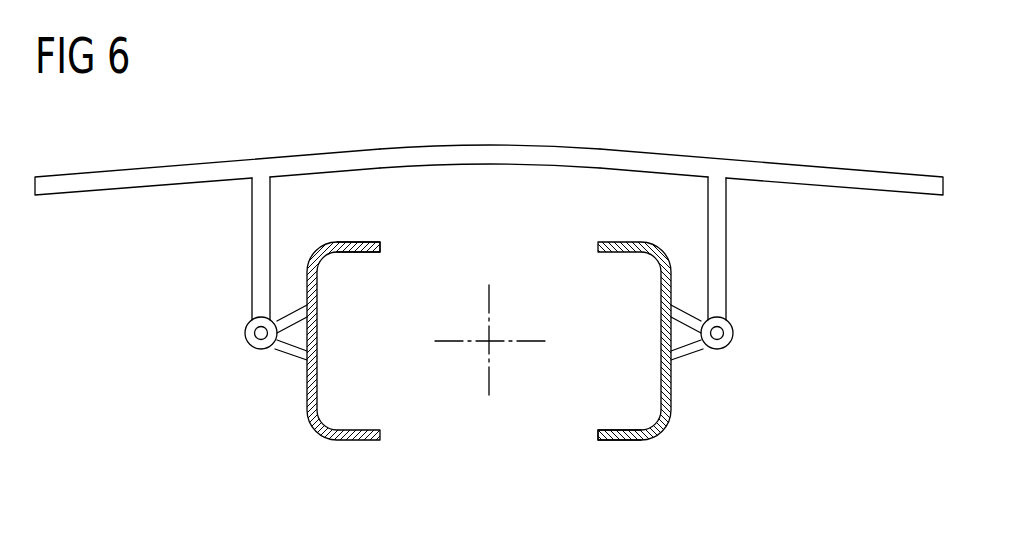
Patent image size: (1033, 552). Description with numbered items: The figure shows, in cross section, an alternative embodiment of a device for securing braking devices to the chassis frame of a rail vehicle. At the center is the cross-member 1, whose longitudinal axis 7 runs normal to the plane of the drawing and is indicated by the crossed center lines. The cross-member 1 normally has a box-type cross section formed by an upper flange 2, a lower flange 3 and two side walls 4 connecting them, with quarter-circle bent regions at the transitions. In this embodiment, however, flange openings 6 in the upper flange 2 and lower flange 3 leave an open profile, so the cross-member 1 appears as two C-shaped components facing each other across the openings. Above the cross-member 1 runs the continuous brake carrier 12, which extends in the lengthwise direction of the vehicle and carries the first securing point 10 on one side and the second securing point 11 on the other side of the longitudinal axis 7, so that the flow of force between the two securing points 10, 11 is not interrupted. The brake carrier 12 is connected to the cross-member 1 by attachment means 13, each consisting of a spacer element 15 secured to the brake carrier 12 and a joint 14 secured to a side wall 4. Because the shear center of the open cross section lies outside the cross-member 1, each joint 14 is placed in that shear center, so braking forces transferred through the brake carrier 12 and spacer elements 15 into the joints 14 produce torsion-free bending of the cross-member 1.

The cross-member 1 is at (454, 419).
The upper flange 2 is at (360, 243).
The lower flange 3 is at (618, 440).
The side wall 4 is at (317, 289).
The flange opening 6 is at (473, 250).
The longitudinal axis 7 is at (490, 342).
The first securing point 10 is at (193, 209).
The second securing point 11 is at (842, 202).
The brake carrier 12 is at (577, 154).
The attachment means 13 is at (231, 312).
The joint 14 is at (283, 356).
The spacer element 15 is at (252, 232).